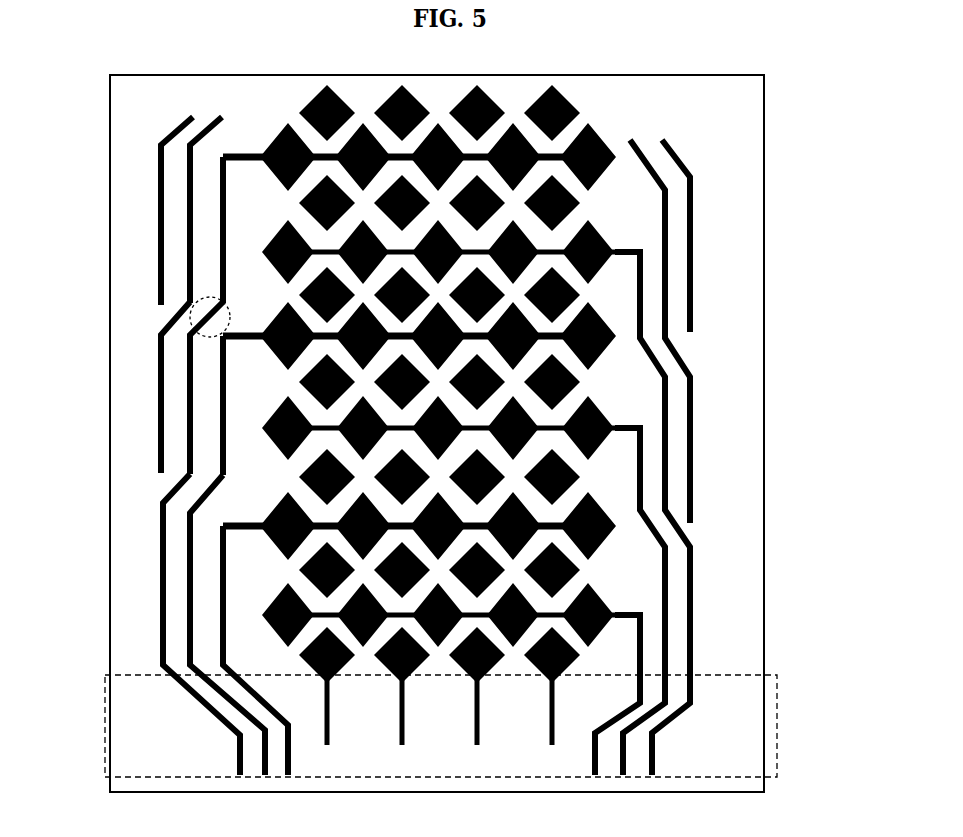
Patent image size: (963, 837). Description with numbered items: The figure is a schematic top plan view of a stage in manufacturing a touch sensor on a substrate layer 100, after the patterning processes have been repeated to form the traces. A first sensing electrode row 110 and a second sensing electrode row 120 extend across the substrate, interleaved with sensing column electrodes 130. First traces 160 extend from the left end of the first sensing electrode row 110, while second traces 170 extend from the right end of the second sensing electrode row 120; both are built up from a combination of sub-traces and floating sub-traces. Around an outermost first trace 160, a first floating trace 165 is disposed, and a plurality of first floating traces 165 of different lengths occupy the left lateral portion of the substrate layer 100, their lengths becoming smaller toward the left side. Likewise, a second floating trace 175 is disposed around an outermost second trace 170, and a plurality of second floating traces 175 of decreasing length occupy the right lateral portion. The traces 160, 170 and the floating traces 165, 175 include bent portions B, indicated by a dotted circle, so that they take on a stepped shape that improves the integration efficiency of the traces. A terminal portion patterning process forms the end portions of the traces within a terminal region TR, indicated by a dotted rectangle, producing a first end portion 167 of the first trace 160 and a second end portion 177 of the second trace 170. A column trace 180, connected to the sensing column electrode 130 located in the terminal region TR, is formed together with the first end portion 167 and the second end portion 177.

The substrate layer 100 is at (752, 650).
The first sensing electrode row 110 is at (273, 173).
The second sensing electrode row 120 is at (612, 235).
The sensing column electrode 130 is at (567, 102).
The first trace 160 is at (220, 417).
The first floating trace 165 is at (155, 368).
The first end portion 167 is at (230, 708).
The second trace 170 is at (668, 460).
The second floating trace 175 is at (697, 418).
The second end portion 177 is at (652, 743).
The column trace 180 is at (580, 705).
The terminal region TR is at (135, 672).
The bent portion B is at (205, 298).